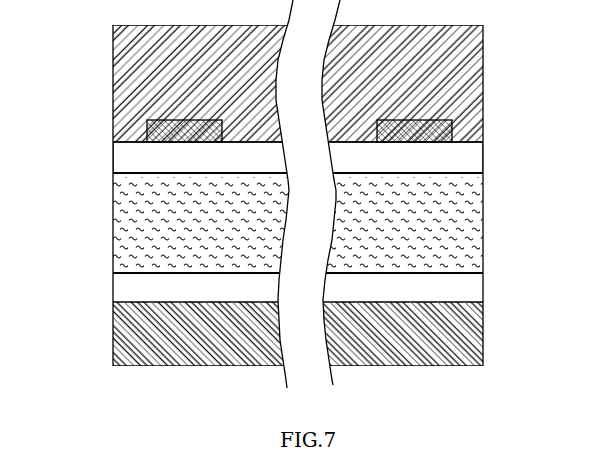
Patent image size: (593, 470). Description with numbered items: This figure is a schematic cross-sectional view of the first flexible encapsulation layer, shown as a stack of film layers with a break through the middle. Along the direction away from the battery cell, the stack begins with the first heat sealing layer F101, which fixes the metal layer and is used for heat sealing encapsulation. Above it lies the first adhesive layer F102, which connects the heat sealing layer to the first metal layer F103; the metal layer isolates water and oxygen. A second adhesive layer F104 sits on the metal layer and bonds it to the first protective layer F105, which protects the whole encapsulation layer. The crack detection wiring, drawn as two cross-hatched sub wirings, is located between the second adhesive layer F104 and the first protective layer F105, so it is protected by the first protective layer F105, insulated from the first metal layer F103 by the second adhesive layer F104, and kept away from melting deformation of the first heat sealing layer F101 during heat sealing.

The first protective layer F105 is at (462, 89).
The second adhesive layer F104 is at (458, 157).
The first metal layer F103 is at (455, 243).
The first adhesive layer F102 is at (453, 290).
The first heat sealing layer F101 is at (462, 340).